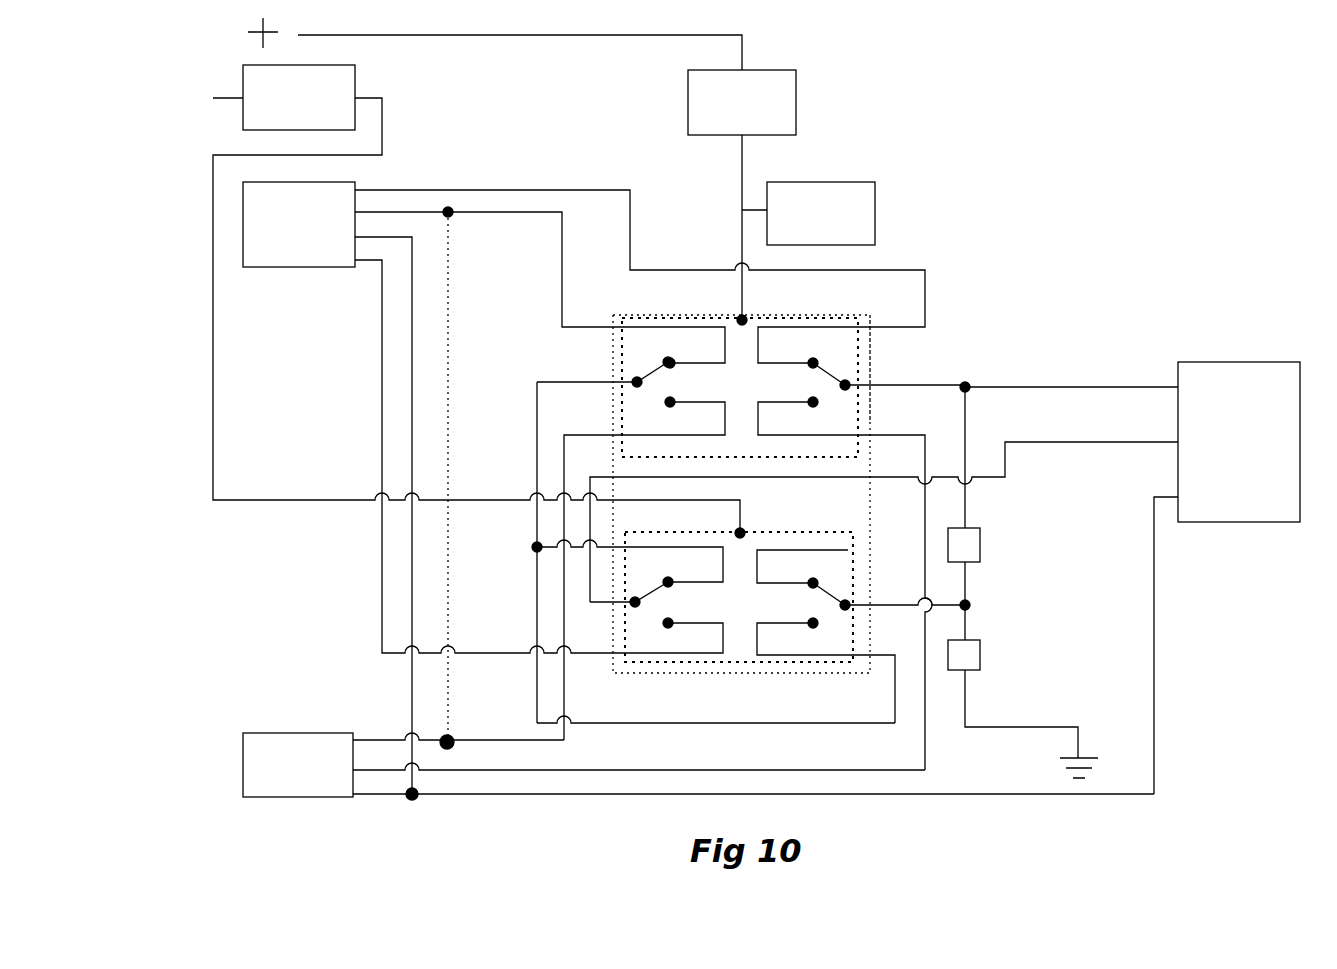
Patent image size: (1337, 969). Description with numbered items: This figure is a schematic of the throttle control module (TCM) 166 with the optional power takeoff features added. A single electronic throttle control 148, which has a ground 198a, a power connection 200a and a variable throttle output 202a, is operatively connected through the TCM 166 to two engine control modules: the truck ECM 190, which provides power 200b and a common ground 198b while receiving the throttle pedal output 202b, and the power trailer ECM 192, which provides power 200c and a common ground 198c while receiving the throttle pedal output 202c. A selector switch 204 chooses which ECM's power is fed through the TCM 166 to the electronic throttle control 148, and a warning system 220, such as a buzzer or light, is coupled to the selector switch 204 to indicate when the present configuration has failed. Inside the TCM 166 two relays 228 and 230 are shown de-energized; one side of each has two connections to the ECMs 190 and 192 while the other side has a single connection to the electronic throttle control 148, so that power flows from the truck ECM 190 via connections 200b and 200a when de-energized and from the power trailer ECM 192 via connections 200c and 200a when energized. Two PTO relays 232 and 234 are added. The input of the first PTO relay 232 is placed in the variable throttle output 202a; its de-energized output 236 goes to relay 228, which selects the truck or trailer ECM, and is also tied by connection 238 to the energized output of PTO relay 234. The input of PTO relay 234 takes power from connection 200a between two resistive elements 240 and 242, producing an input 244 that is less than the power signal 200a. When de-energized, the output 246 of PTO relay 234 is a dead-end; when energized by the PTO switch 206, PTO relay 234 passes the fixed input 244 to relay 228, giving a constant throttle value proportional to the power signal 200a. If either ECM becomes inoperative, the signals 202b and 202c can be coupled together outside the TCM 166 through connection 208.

The electronic throttle control 148 is at (1228, 385).
The throttle control module (TCM) 166 is at (872, 370).
The truck ECM 190 is at (355, 195).
The power trailer ECM 192 is at (280, 733).
The ground 198a is at (1154, 650).
The common ground 198b is at (380, 418).
The common ground 198c is at (514, 798).
The power 200a is at (1075, 387).
The power 200b is at (497, 188).
The power 200c is at (585, 750).
The variable throttle output 202a is at (1090, 447).
The throttle pedal output 202b is at (470, 214).
The throttle pedal output 202c is at (478, 741).
The selector switch 204 is at (796, 103).
The PTO switch 206 is at (355, 86).
The connection 208 is at (448, 347).
The warning system 220 is at (875, 215).
The relay 228 is at (649, 352).
The relay 230 is at (835, 368).
The first PTO relay 232 is at (668, 628).
The PTO relay 234 is at (815, 628).
The de-energized output 236 is at (673, 577).
The connection 238 is at (840, 725).
The resistive element 240 is at (980, 545).
The resistive element 242 is at (980, 655).
The input 244 is at (890, 603).
The de-energized output 246 is at (810, 578).